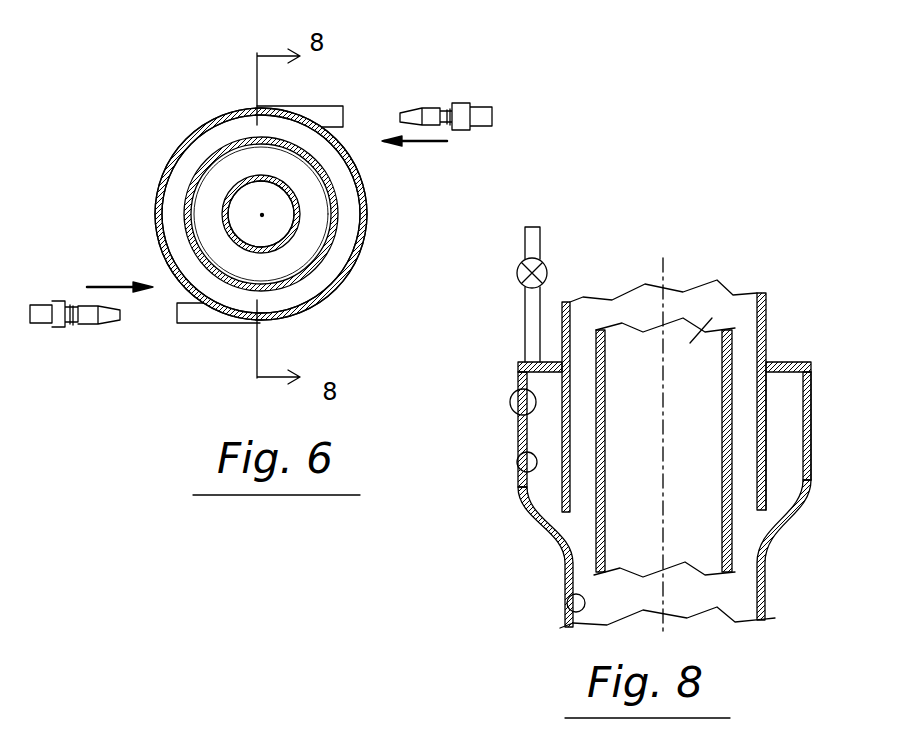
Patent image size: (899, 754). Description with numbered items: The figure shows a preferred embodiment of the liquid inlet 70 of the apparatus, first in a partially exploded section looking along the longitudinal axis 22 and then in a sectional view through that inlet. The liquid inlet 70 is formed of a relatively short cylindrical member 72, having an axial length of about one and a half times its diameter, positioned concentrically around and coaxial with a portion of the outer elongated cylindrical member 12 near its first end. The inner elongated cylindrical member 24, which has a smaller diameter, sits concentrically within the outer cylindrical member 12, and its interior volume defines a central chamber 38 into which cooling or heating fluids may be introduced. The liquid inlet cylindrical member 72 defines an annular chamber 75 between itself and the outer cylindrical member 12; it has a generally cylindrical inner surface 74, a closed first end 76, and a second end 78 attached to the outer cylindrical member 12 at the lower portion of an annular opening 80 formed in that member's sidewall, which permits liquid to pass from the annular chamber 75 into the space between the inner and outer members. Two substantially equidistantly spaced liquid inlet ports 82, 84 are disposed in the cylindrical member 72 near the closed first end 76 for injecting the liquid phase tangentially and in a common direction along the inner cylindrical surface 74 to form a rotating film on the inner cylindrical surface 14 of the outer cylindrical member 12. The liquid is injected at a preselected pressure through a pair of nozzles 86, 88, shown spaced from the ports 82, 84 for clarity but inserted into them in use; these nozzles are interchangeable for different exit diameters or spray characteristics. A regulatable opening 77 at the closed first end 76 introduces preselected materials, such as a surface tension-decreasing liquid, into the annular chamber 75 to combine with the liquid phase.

In FIG. 6, the outer elongated cylindrical member 12 is at (336, 189).
In FIG. 8, the outer elongated cylindrical member 12 is at (560, 322).
In FIG. 8, the inner cylindrical surface 14 is at (567, 601).
In FIG. 6, the longitudinal axis 22 is at (240, 193).
In FIG. 8, the longitudinal axis 22 is at (660, 268).
In FIG. 6, the inner elongated cylindrical member 24 is at (262, 215).
In FIG. 8, the inner elongated cylindrical member 24 is at (734, 342).
In FIG. 6, the central chamber 38 is at (238, 223).
In FIG. 8, the central chamber 38 is at (687, 343).
In FIG. 6, the liquid inlet 70 is at (340, 290).
In FIG. 8, the liquid inlet 70 is at (813, 479).
In FIG. 6, the liquid inlet cylindrical member 72 is at (366, 226).
In FIG. 8, the liquid inlet cylindrical member 72 is at (518, 437).
In FIG. 8, the inner cylindrical surface 74 is at (518, 470).
In FIG. 6, the annular chamber 75 is at (350, 211).
In FIG. 8, the annular chamber 75 is at (785, 413).
In FIG. 8, the closed first end 76 is at (790, 362).
In FIG. 8, the regulatable opening 77 is at (525, 352).
In FIG. 8, the second end 78 is at (538, 528).
In FIG. 8, the annular opening 80 is at (762, 525).
In FIG. 6, the liquid inlet port 82 is at (337, 105).
In FIG. 8, the liquid inlet port 82 is at (511, 404).
In FIG. 6, the liquid inlet port 84 is at (197, 320).
In FIG. 6, the nozzle 86 is at (462, 103).
In FIG. 6, the nozzle 88 is at (62, 301).